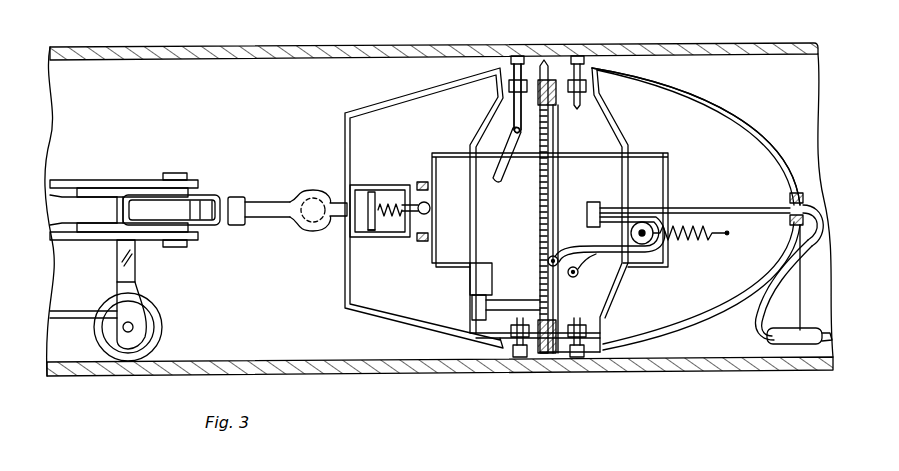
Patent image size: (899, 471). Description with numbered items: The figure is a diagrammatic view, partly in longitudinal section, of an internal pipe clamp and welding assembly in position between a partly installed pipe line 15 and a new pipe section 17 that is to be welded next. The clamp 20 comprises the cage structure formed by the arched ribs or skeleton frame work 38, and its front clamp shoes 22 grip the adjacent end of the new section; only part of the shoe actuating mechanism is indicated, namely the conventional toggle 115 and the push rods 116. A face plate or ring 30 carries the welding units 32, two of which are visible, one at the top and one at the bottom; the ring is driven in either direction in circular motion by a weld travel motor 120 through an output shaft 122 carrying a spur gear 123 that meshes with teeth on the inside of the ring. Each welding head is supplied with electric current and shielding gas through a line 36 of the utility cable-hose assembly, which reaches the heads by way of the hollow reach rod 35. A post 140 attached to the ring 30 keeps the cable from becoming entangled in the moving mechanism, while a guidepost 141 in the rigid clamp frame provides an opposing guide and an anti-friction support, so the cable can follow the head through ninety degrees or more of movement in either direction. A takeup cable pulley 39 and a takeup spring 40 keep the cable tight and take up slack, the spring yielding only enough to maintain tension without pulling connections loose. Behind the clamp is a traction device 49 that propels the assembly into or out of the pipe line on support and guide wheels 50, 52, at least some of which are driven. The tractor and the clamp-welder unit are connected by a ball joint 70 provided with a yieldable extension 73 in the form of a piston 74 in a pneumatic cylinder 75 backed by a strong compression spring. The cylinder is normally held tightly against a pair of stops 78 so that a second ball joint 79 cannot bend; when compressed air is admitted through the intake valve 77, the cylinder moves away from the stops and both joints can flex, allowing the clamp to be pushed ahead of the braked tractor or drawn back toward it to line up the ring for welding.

The pipe line 15 is at (292, 46).
The additional pipe section 17 is at (700, 45).
The clamp 20 is at (694, 327).
The front clamp shoes 22 is at (592, 367).
The face plate or ring 30 is at (556, 102).
The welding unit 32 is at (548, 62).
The hollow reach rod 35 is at (806, 346).
The utility cable-hose assembly 36 is at (812, 205).
The arched ribs or skeleton frame work 38 is at (755, 127).
The takeup cable pulley 39 is at (662, 257).
The takeup spring 40 is at (700, 242).
The traction device 49 is at (66, 176).
The support and guide wheel 50 is at (160, 312).
The support and guide wheel 52 is at (207, 195).
The ball joint unit 70 is at (318, 188).
The yieldable extension 73 is at (395, 240).
The piston 74 is at (366, 236).
The pneumatic cylinder 75 is at (378, 190).
The intake valve 77 is at (365, 188).
The stops 78 is at (424, 180).
The second ball joint 79 is at (430, 210).
The toggle 115 is at (505, 150).
The push rods 116 is at (514, 110).
The weld travel motor 120 is at (472, 292).
The output shaft 122 is at (543, 305).
The spur gear 123 is at (500, 291).
The post 140 is at (553, 255).
The guidepost 141 is at (578, 269).